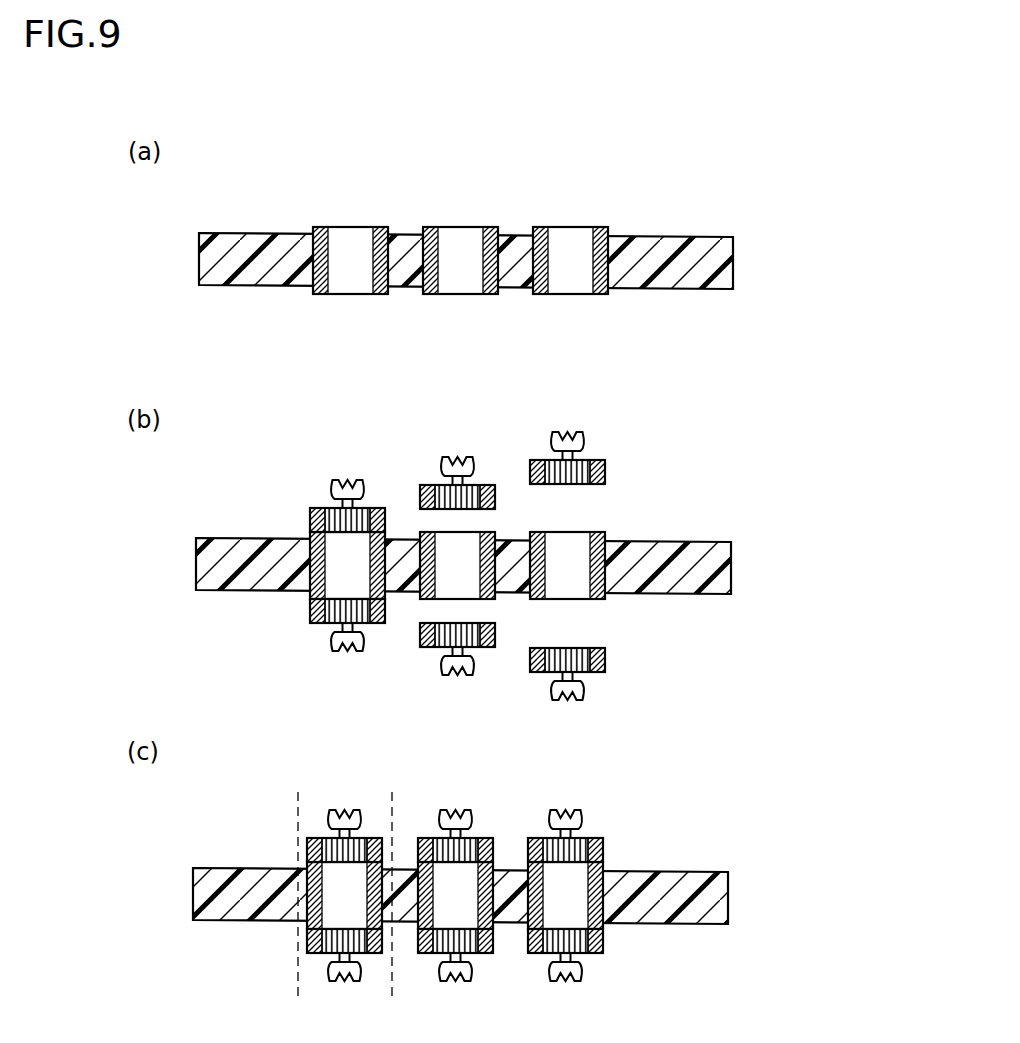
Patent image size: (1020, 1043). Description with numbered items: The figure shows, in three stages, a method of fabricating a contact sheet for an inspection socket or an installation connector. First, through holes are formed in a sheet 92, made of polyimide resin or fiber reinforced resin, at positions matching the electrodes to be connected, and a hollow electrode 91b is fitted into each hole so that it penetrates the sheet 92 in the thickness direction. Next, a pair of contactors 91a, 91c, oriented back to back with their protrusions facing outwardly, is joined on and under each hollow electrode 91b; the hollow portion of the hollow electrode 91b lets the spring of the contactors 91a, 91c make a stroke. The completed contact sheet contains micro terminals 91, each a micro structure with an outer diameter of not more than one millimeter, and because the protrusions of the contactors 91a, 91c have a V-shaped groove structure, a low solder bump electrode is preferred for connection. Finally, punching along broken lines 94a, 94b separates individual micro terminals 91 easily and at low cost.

The micro terminal 91 is at (589, 577).
The contactor 91a is at (605, 472).
The hollow electrode 91b is at (597, 229).
The contactor 91c is at (601, 943).
The sheet 92 is at (700, 274).
The broken line 94a is at (296, 913).
The broken line 94b is at (390, 913).